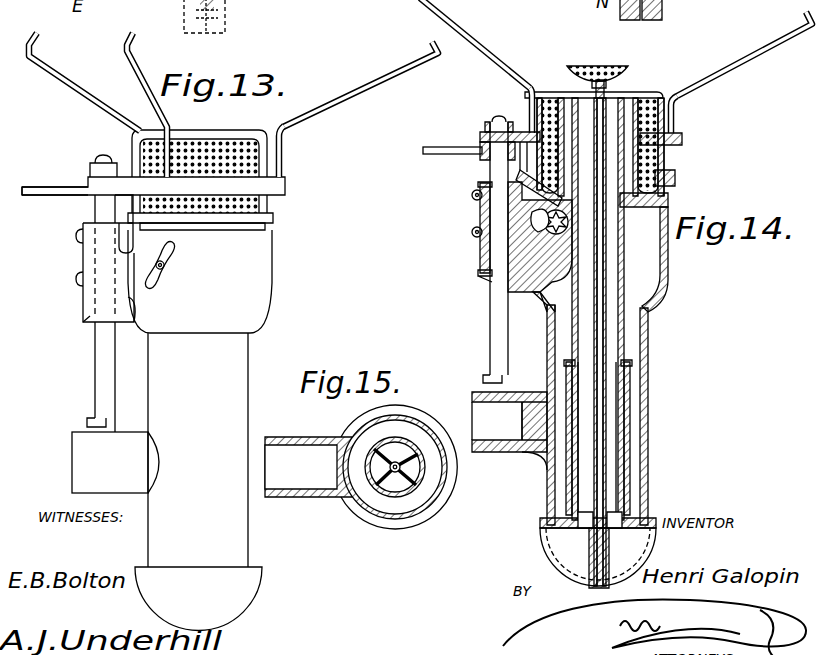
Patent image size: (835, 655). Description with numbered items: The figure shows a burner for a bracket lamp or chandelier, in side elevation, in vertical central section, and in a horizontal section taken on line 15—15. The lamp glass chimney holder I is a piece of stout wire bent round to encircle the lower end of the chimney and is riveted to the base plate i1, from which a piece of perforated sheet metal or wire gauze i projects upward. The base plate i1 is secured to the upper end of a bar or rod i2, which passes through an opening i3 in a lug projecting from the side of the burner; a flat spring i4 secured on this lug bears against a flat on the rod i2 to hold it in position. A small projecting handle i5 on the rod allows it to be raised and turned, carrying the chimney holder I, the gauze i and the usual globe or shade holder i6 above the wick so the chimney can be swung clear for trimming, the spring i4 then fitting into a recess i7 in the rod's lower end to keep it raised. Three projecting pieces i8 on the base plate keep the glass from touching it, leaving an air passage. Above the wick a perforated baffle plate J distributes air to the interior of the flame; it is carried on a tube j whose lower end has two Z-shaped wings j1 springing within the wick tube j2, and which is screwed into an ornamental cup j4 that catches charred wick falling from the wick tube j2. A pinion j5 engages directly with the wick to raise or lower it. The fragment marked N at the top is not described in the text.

In FIG. 13, the lamp glass chimney holder I is at (199, 162).
In FIG. 14, the lamp glass chimney holder I is at (646, 95).
In FIG. 14, the baffle plate J is at (567, 68).
In FIG. 13, the connection box N is at (184, 12).
In FIG. 13, the piece of perforated sheet metal or wire gauze i is at (283, 161).
In FIG. 14, the piece of perforated sheet metal or wire gauze i is at (657, 118).
In FIG. 13, the base plate i1 is at (287, 184).
In FIG. 14, the base plate i1 is at (673, 147).
In FIG. 13, the bar or rod i2 is at (95, 220).
In FIG. 14, the bar or rod i2 is at (492, 176).
In FIG. 13, the opening i3 is at (94, 291).
In FIG. 14, the opening i3 is at (481, 253).
In FIG. 13, the flat spring i4 is at (82, 258).
In FIG. 14, the flat spring i4 is at (480, 215).
In FIG. 13, the projecting handle i5 is at (51, 194).
In FIG. 14, the projecting handle i5 is at (448, 146).
In FIG. 13, the globe or shade holder i6 is at (356, 130).
In FIG. 14, the globe or shade holder i6 is at (718, 78).
In FIG. 13, the recess i7 is at (92, 421).
In FIG. 14, the recess i7 is at (485, 381).
In FIG. 14, the projecting pieces i8 is at (682, 136).
In FIG. 14, the tube j is at (602, 255).
In FIG. 15, the Z-shaped wings j1 is at (412, 472).
In FIG. 14, the Z-shaped wings j1 is at (620, 385).
In FIG. 14, the wick tube j2 is at (625, 320).
In FIG. 14, the ornamental cup or receptacle j4 is at (598, 550).
In FIG. 14, the pinion j5 is at (556, 236).
In FIG. 14, the section line 15— 15 is at (688, 421).